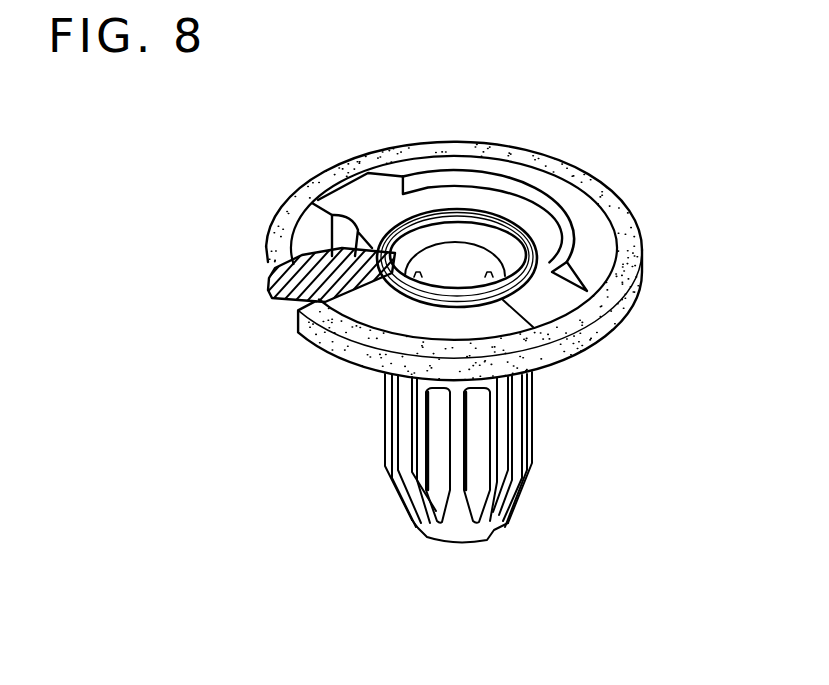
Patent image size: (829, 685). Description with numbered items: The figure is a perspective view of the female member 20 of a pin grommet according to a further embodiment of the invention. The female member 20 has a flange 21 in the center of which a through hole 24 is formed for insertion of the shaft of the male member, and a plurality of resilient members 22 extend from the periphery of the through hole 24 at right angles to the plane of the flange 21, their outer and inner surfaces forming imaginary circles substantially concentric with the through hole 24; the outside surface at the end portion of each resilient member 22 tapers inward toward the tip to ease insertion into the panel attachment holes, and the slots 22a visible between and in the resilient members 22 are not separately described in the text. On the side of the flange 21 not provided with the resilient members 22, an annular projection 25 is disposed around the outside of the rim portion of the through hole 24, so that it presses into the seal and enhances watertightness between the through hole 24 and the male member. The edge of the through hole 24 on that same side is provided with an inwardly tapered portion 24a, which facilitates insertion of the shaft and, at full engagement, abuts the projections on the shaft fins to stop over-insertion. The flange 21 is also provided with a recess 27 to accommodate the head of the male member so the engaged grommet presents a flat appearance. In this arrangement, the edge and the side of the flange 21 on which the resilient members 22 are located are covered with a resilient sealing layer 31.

The female member 20 is at (572, 200).
The flange 21 is at (593, 258).
The resilient members 22 is at (444, 531).
The slots in legs 22a is at (400, 500).
The through hole 24 is at (456, 266).
The tapered portion 24a is at (430, 232).
The annular projection 25 is at (388, 207).
The recess 27 is at (505, 202).
The resilient sealing layer 31 is at (607, 327).